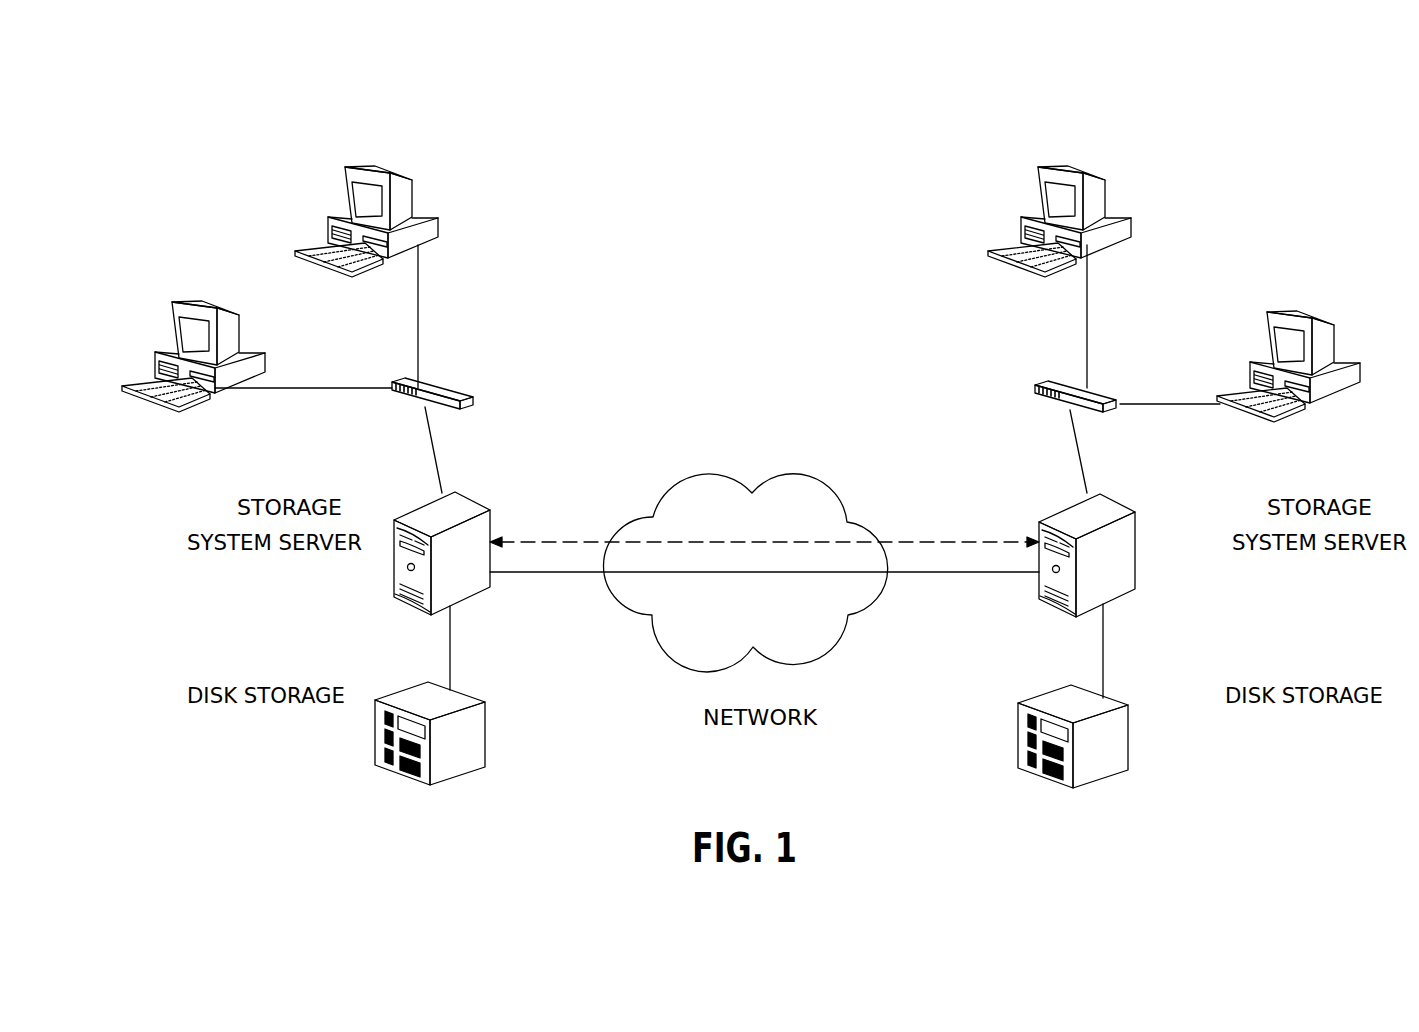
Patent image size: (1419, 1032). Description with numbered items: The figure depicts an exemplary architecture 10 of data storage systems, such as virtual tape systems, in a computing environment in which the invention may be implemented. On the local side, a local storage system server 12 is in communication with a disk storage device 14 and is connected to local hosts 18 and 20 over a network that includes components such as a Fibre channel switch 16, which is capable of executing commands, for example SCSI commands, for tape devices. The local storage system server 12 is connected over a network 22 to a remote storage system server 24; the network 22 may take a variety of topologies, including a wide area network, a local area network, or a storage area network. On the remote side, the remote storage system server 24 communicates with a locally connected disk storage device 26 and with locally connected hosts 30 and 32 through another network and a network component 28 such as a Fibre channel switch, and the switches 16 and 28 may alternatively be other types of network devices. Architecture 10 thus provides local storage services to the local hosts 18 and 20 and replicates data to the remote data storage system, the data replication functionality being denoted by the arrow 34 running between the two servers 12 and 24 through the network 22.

The architecture 10 is at (1289, 130).
The local storage system server 12 is at (470, 495).
The disk storage device 14 is at (485, 735).
The Fibre channel switch 16 is at (437, 383).
The local host 18 is at (240, 332).
The local host 20 is at (413, 193).
The network 22 is at (835, 492).
The remote storage system server 24 is at (1135, 560).
The disk storage device 26 is at (1130, 742).
The Fibre channel switch 28 is at (1060, 382).
The host 30 is at (1107, 193).
The host 32 is at (1337, 340).
The arrow 34 is at (918, 542).